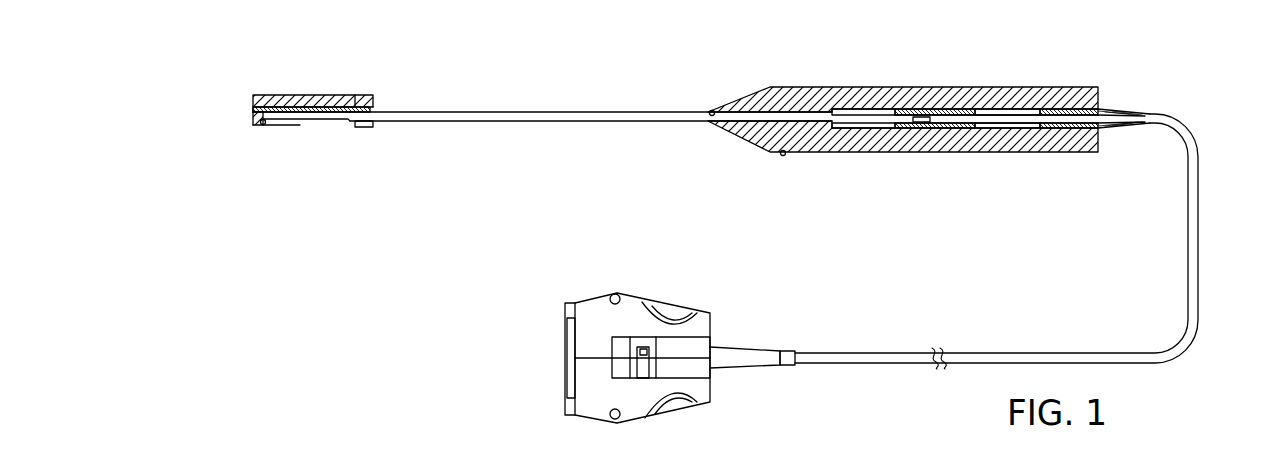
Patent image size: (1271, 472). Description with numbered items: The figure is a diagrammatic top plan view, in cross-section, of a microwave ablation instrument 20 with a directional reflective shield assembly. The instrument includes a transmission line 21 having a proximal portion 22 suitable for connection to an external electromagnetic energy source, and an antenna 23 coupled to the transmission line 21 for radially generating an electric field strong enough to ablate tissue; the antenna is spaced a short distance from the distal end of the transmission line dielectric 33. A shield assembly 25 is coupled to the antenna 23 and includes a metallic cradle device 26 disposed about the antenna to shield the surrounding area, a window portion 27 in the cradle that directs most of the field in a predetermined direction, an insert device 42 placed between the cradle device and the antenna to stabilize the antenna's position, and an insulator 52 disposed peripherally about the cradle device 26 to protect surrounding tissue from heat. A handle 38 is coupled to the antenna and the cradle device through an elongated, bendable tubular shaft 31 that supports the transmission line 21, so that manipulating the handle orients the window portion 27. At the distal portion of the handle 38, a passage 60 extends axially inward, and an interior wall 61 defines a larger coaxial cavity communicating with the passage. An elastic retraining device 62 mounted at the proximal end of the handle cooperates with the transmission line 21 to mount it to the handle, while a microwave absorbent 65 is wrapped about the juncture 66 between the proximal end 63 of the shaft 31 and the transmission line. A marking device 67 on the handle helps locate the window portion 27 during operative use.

The microwave ablation instrument 20 is at (481, 242).
The transmission line 21 is at (1193, 218).
The proximal portion 22 is at (866, 356).
The antenna 23 is at (312, 125).
The shield assembly 25 is at (247, 98).
The cradle device 26 is at (347, 98).
The window portion 27 is at (346, 125).
The tubular shaft 31 is at (512, 112).
The transmission line dielectric 33 is at (263, 127).
The handle 38 is at (826, 84).
The insert device 42 is at (252, 112).
The insulator 52 is at (282, 95).
The passage 60 is at (711, 112).
The interior wall 61 is at (1015, 110).
The elastic retraining device 62 is at (1118, 108).
The proximal end 63 is at (878, 115).
The microwave absorbent 65 is at (955, 110).
The juncture 66 is at (928, 123).
The marking device 67 is at (783, 156).